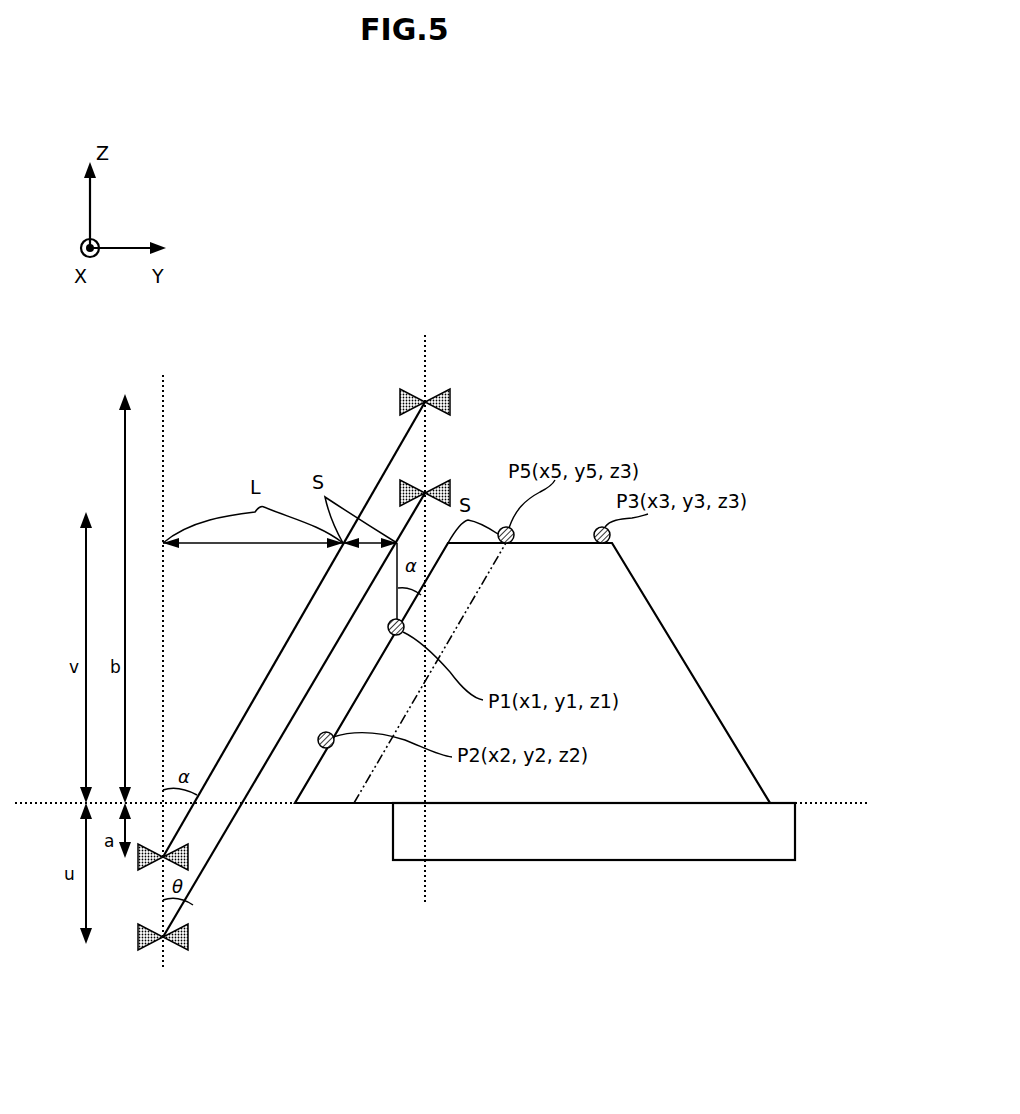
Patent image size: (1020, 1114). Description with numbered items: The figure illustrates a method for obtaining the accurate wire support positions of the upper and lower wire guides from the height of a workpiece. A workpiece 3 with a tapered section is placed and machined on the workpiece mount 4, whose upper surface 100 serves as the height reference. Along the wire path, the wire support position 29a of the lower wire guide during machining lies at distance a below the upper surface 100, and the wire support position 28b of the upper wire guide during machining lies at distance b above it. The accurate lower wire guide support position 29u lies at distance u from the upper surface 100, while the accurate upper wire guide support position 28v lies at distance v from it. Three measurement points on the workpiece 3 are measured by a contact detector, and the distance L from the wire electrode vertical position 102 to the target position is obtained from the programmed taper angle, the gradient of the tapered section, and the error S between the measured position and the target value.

The wire electrode vertical position 102 is at (163, 420).
The wire support position of the upper wire guide during machining 28b is at (444, 399).
The accurate upper wire guide support position 28v is at (444, 490).
The wire support position of the lower wire guide during machining 29a is at (185, 845).
The accurate lower wire guide support position 29u is at (185, 925).
The workpiece 3 is at (650, 657).
The workpiece mount 4 is at (785, 850).
The upper surface 100 is at (828, 793).